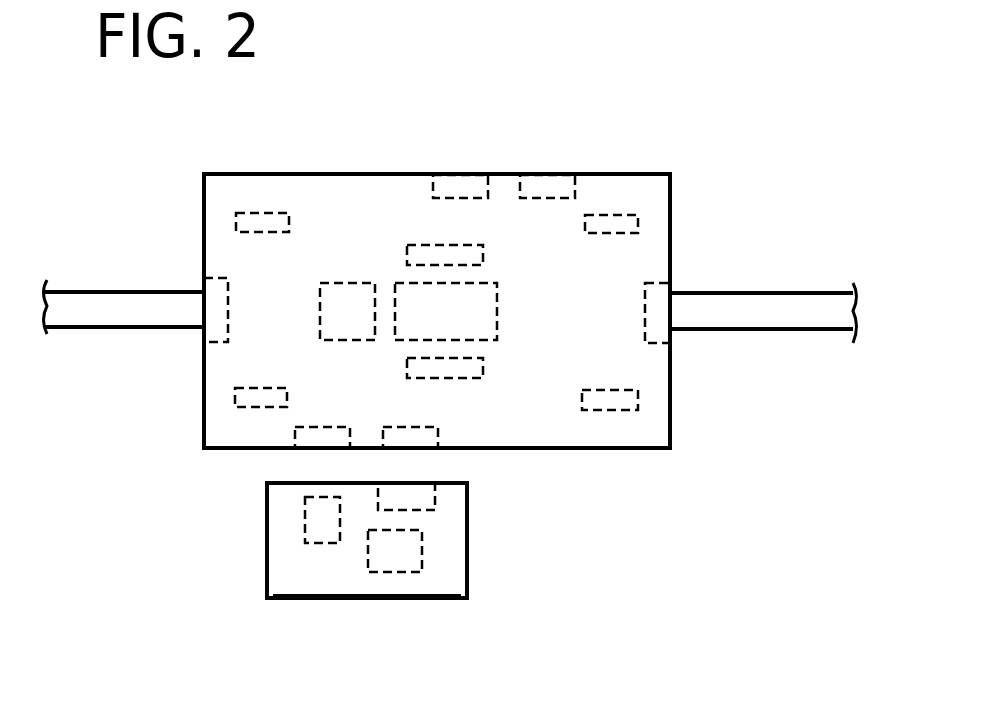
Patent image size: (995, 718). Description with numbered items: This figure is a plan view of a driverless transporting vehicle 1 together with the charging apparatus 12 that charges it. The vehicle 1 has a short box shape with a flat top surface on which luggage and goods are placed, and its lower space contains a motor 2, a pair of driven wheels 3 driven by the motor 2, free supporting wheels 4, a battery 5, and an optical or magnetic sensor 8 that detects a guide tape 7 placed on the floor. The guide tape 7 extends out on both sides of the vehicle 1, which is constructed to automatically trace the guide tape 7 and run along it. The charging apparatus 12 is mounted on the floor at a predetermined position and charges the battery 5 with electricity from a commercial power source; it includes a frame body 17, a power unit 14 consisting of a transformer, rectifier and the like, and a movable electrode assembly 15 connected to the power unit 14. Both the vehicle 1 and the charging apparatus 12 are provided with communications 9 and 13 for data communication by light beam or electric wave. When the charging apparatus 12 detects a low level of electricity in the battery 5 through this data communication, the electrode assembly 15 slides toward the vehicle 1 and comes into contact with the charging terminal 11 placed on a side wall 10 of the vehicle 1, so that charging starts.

The vehicle 1 is at (391, 170).
The motor 2 is at (497, 315).
The driven wheels 3 is at (483, 255).
The free supporting wheels 4 is at (250, 212).
The battery 5 is at (348, 283).
The guide tape 7 is at (100, 297).
The optical or magnetic sensor 8 is at (222, 280).
The communication 9 is at (455, 190).
The side wall 10 is at (290, 175).
The charging terminal 11 is at (555, 190).
The charging apparatus 12 is at (323, 602).
The communication 13 is at (430, 505).
The power unit 14 is at (410, 565).
The movable electrode assembly 15 is at (305, 530).
The frame body 17 is at (267, 592).